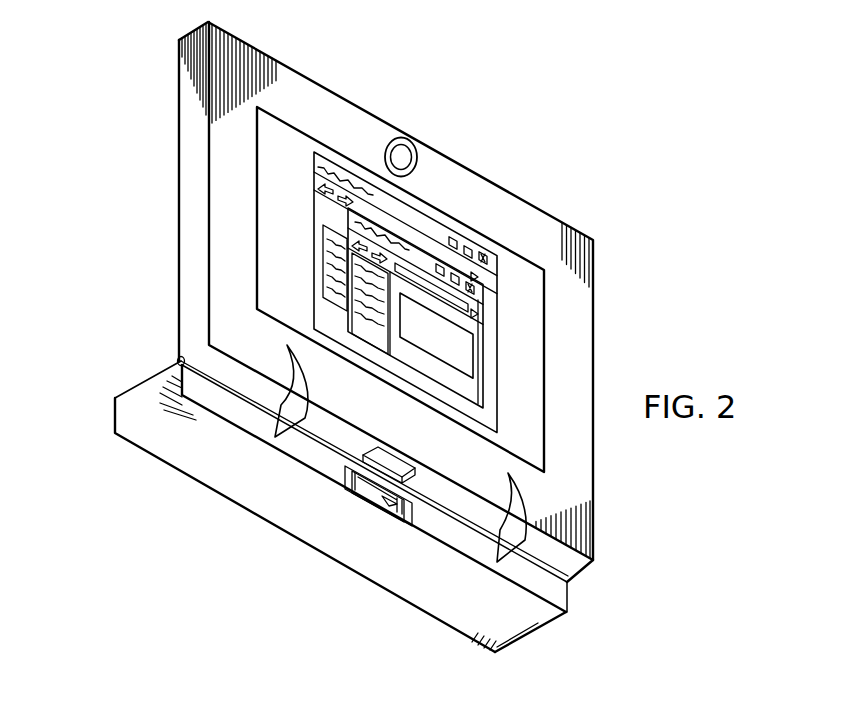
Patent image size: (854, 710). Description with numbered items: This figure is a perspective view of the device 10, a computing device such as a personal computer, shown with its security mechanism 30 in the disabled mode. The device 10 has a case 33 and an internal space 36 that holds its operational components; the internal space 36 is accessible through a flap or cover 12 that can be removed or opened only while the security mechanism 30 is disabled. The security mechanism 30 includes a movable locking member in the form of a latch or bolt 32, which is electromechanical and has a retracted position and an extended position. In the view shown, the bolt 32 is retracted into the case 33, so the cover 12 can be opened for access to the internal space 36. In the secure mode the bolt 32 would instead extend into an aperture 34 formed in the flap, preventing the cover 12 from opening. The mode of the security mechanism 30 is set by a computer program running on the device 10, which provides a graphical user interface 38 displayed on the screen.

The device 10 is at (561, 137).
The flap or cover 12 is at (120, 410).
The security mechanism 30 is at (412, 518).
The latch or bolt 32 is at (392, 468).
The case 33 is at (323, 105).
The aperture 34 is at (394, 506).
The internal space 36 is at (548, 593).
The graphical user interface 38 is at (435, 232).